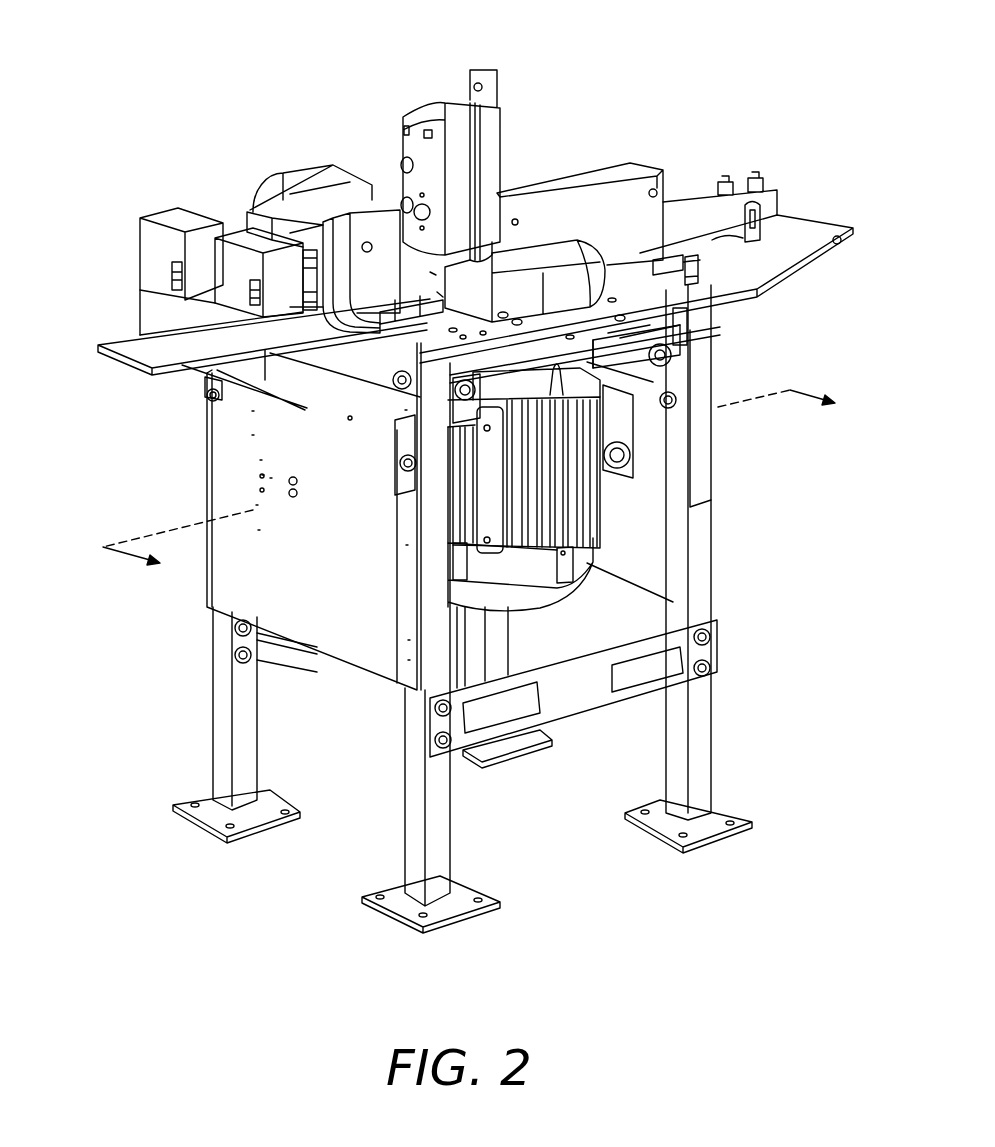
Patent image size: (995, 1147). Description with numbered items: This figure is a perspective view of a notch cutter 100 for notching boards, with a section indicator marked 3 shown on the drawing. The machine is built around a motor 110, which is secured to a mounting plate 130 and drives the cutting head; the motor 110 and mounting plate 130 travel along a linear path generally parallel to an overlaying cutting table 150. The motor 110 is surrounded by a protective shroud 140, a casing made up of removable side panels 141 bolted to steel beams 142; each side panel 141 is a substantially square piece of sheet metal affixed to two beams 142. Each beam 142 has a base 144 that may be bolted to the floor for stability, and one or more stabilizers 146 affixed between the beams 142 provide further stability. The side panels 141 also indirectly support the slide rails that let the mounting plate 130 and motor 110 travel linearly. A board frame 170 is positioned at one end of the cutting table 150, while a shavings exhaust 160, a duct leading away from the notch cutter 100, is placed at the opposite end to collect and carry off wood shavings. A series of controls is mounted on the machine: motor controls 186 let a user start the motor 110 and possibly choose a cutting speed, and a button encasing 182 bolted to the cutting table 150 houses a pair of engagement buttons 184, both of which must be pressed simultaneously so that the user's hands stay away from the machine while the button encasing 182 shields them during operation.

The notch cutter 100 is at (165, 110).
The motor 110 is at (590, 474).
The mounting plate 130 is at (612, 351).
The shroud 140 is at (454, 609).
The side panel 141 is at (341, 574).
The beam 142 is at (220, 702).
The base 144 is at (205, 797).
The stabilizer 146 is at (570, 688).
The cutting table 150 is at (768, 291).
The shavings exhaust 160 is at (290, 118).
The board frame 170 is at (575, 130).
The button encasing 182 is at (140, 198).
The engagement buttons 184 is at (250, 290).
The motor controls 186 is at (428, 78).
The section line 3- 3 is at (478, 485).